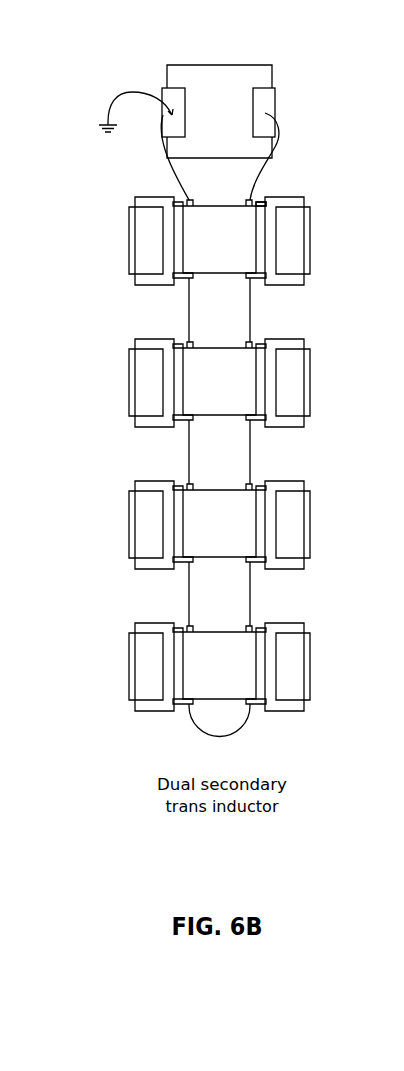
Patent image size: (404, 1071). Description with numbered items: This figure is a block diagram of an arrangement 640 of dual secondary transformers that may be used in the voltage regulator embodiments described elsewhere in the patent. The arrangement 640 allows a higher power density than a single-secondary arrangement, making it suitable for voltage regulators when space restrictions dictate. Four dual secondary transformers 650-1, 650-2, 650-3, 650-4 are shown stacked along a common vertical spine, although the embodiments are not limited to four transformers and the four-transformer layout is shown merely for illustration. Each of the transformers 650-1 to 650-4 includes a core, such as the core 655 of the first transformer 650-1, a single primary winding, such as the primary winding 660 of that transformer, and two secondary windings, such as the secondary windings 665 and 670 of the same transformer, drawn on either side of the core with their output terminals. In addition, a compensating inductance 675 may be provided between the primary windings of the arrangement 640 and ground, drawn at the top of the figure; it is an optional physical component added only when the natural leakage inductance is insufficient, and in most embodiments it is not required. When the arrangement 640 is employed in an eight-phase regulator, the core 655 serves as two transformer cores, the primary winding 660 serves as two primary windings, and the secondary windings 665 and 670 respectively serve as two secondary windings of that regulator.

The arrangement of dual secondary transformers 640 is at (219, 572).
The dual secondary transformer 650-1 is at (106, 245).
The dual secondary transformer 650-2 is at (187, 384).
The dual secondary transformer 650-3 is at (187, 526).
The dual secondary transformer 650-4 is at (187, 668).
The core 655 is at (234, 190).
The primary winding 660 is at (256, 200).
The secondary winding 665 is at (143, 284).
The secondary winding 670 is at (290, 284).
The compensating inductance 675 is at (199, 65).